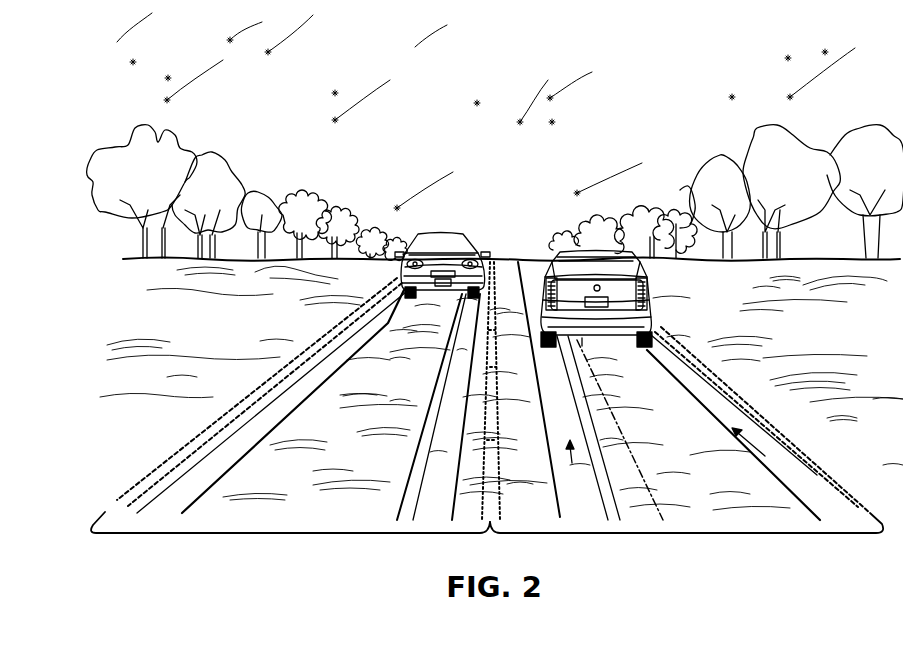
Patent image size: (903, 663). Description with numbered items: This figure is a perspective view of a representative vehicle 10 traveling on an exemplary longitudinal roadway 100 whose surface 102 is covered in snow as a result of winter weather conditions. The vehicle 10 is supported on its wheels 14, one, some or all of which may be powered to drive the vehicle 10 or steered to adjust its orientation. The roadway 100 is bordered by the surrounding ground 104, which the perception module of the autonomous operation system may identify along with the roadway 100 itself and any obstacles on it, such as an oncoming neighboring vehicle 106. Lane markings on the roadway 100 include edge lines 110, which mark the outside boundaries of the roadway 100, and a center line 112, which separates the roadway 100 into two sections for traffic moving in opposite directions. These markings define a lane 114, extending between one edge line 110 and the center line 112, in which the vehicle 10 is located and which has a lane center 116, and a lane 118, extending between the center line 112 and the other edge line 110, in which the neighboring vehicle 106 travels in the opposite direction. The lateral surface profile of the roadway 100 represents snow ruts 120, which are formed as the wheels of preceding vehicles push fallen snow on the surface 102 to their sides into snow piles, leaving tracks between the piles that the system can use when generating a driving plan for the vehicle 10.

The vehicle 10 is at (551, 263).
The wheels 14 is at (549, 348).
The roadway 100 is at (507, 283).
The surface 102 is at (645, 433).
The surrounding ground 104 is at (375, 277).
The oncoming neighboring vehicle 106 is at (452, 236).
The edge lines 110 is at (198, 434).
The center line 112 is at (500, 478).
The lane 114 is at (686, 535).
The lane center 116 is at (650, 476).
The lane 118 is at (290, 535).
The snow ruts 120 is at (675, 458).